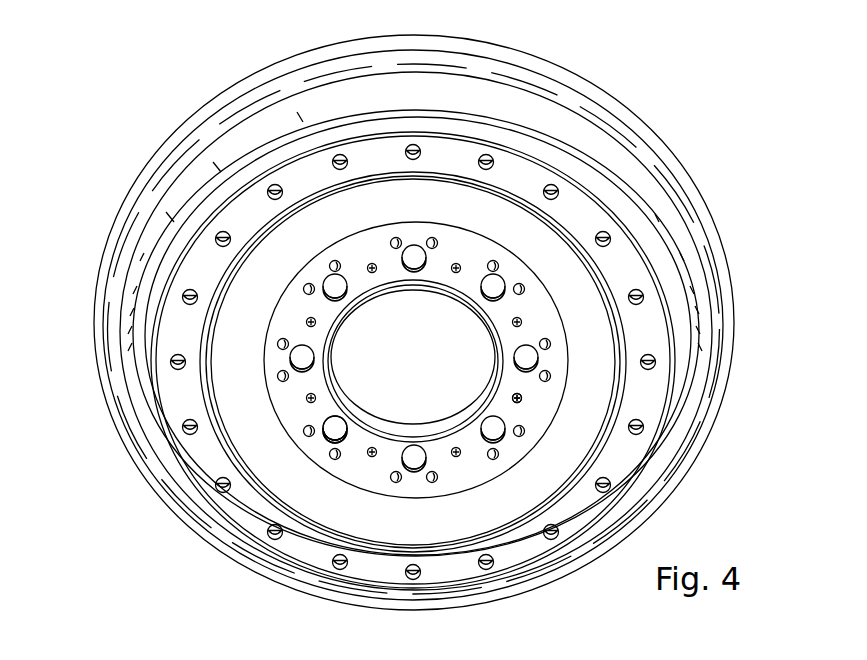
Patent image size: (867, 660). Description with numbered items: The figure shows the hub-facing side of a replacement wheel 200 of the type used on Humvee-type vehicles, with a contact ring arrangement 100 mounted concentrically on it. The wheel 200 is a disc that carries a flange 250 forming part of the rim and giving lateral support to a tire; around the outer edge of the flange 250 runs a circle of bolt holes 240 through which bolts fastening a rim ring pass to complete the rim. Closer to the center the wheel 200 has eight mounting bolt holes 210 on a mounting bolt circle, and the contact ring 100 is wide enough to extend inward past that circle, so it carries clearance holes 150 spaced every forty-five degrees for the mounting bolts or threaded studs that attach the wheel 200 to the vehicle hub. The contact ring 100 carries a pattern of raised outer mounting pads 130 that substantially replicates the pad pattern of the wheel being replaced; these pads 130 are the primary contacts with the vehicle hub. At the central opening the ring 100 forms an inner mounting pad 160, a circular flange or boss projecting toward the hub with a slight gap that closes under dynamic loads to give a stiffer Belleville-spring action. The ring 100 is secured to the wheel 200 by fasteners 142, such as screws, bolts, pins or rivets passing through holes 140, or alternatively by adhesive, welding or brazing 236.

The contact ring arrangement 100 is at (262, 402).
The mounting pads 130 is at (524, 286).
The holes 140 is at (523, 399).
The fasteners 142 is at (523, 396).
The clearance holes 150 is at (348, 440).
The inner mounting pad 160 is at (438, 433).
The replacement wheel 200 is at (220, 94).
The mounting bolt holes 210 is at (332, 434).
The adhesive, welding or brazing 236 is at (560, 313).
The bolt holes 240 is at (188, 289).
The flange 250 is at (560, 52).